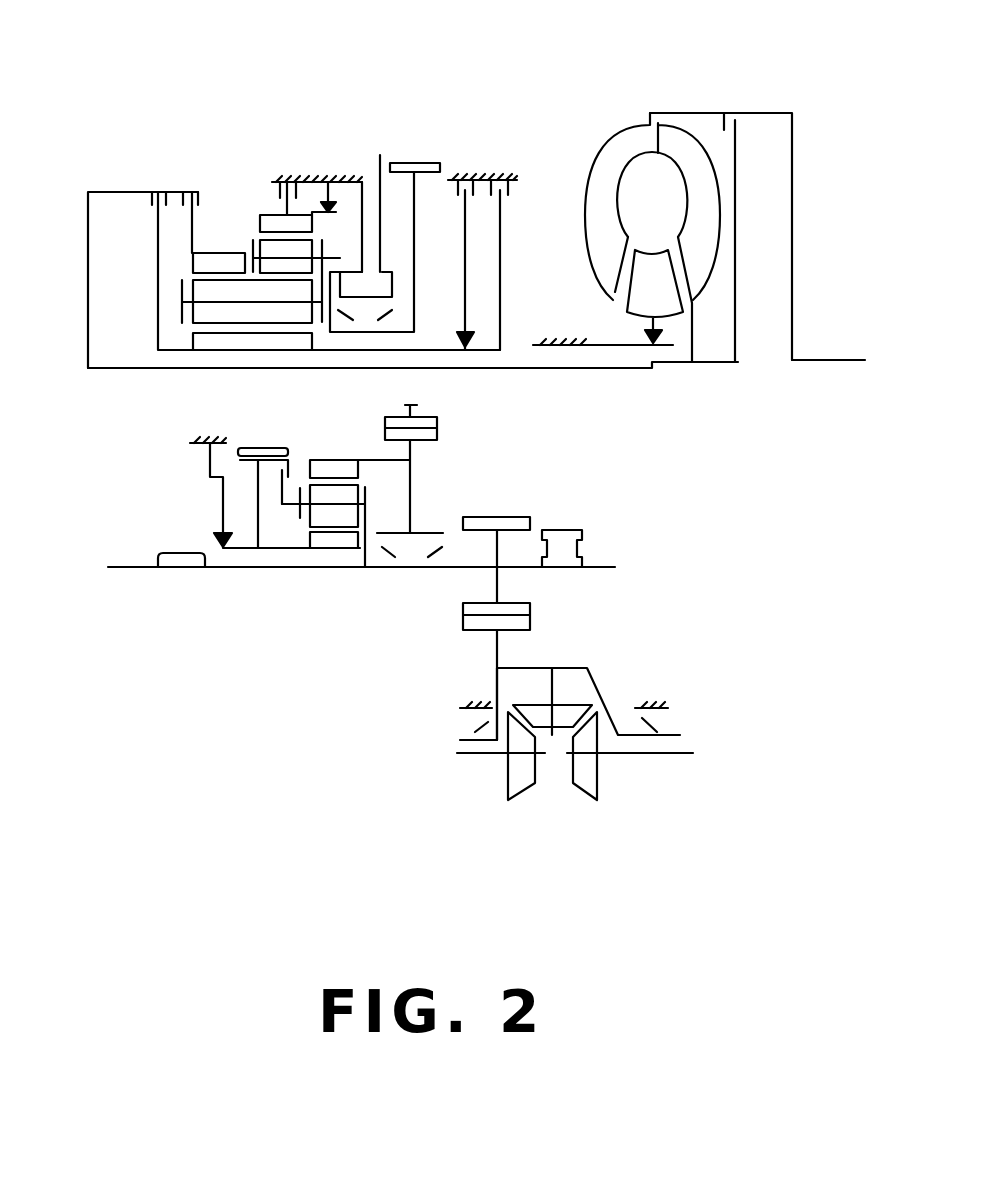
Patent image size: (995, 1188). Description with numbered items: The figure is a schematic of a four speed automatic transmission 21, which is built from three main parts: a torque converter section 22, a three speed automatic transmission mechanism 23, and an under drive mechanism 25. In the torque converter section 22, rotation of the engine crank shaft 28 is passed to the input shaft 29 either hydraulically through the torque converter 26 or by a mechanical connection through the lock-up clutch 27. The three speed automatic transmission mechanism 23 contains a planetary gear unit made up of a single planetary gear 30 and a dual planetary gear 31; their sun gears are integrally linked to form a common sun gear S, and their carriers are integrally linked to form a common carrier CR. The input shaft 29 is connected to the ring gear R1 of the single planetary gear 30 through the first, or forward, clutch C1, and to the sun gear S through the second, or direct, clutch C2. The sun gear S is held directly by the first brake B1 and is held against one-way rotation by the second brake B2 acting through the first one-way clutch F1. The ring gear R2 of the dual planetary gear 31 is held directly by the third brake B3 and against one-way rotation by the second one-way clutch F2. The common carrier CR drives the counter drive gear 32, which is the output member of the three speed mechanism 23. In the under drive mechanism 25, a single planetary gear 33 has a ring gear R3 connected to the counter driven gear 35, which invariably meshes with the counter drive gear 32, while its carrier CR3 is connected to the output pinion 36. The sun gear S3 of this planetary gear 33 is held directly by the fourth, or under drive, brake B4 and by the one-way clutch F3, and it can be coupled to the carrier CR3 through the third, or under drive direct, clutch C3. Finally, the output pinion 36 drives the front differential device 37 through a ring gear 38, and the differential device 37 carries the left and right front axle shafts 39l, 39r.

The four speed automatic transmission 21 is at (148, 105).
The torque converter section 22 is at (697, 97).
The three speed automatic transmission mechanism 23 is at (300, 148).
The under drive mechanism 25 is at (140, 468).
The torque converter 26 is at (625, 150).
The lock-up clutch 27 is at (743, 128).
The engine crank shaft 28 is at (840, 358).
The input shaft 29 is at (648, 372).
The single planetary gear 30 is at (217, 222).
The dual planetary gear 31 is at (262, 205).
The counter drive gear 32 is at (420, 160).
The single planetary gear 33 is at (327, 455).
The counter driven gear 35 is at (427, 439).
The output pinion 36 is at (507, 522).
The front differential device 37 is at (600, 672).
The ring gear 38 is at (527, 623).
The left front axle shaft 39l is at (465, 757).
The right front axle shaft 39r is at (662, 757).
The first (forward) clutch C1 is at (184, 208).
The second (direct) clutch C2 is at (156, 251).
The third (under drive direct) clutch C3 is at (282, 472).
The first (2nd coast) brake B1 is at (513, 246).
The second (2nd) brake B2 is at (482, 237).
The third (1st coast & reverse) brake B3 is at (310, 179).
The fourth (under drive) brake B4 is at (263, 485).
The first one-way clutch F1 is at (449, 322).
The second one-way clutch F2 is at (340, 178).
The one-way clutch F3 is at (267, 492).
The ring gear R1 is at (218, 260).
The ring gear R2 is at (302, 222).
The ring gear R3 is at (343, 468).
The common sun gear S is at (236, 344).
The sun gear S3 is at (337, 547).
The common carrier CR is at (355, 242).
The carrier CR3 is at (365, 504).